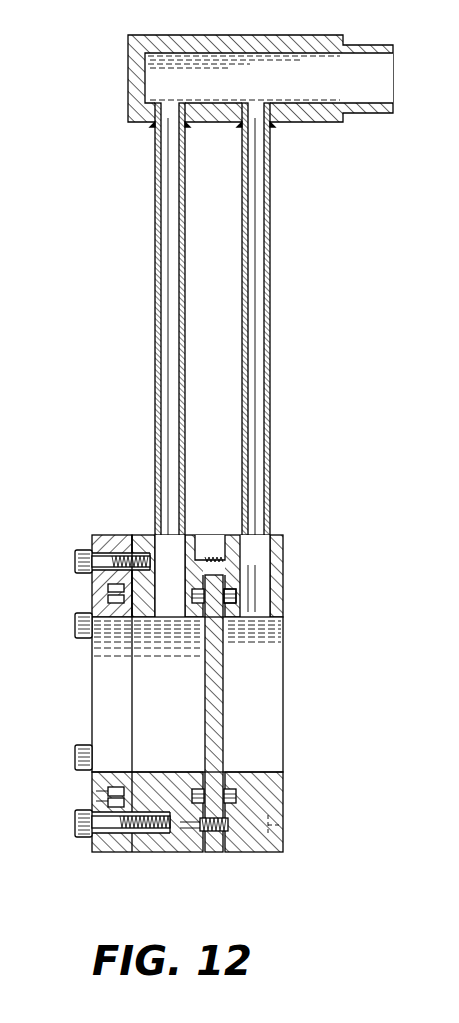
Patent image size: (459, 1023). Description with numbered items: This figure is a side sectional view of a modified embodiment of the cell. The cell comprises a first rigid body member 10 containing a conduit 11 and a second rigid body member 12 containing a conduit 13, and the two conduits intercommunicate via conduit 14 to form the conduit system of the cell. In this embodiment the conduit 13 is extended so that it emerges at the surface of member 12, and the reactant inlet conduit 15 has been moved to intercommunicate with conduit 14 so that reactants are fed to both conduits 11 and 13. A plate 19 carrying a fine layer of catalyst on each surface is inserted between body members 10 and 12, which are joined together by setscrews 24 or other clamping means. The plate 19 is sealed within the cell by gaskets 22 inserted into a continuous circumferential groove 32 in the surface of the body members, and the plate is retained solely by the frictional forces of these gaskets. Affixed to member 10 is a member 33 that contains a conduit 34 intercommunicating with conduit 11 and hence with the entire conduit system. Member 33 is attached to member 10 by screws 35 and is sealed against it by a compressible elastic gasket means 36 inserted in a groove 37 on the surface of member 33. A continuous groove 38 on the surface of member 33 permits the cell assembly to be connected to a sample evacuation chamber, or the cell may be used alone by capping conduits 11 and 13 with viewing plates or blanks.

The first rigid body member 10 is at (165, 852).
The conduit 11 is at (170, 716).
The second rigid body member 12 is at (283, 797).
The conduit 13 is at (262, 716).
The conduit 14 is at (271, 280).
The conduit 15 is at (325, 122).
The plate 19 is at (210, 852).
The gaskets 22 is at (227, 574).
The setscrews 24 is at (278, 566).
The continuous circumferential groove 32 is at (236, 596).
The member 33 is at (103, 535).
The conduit 34 is at (108, 687).
The screws 35 is at (75, 557).
The compressible elastic gasket means 36 is at (118, 794).
The groove 37 is at (108, 599).
The continuous groove 38 is at (108, 587).